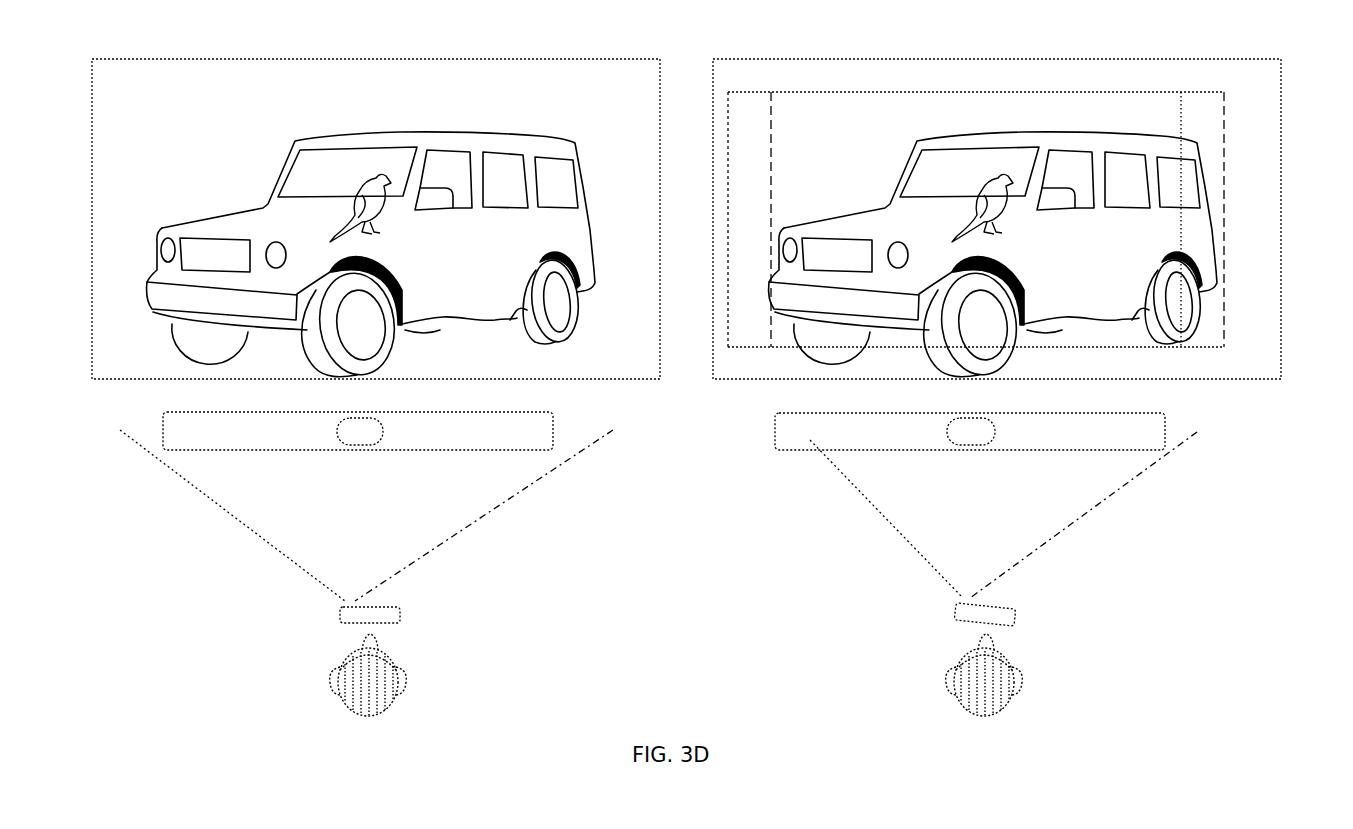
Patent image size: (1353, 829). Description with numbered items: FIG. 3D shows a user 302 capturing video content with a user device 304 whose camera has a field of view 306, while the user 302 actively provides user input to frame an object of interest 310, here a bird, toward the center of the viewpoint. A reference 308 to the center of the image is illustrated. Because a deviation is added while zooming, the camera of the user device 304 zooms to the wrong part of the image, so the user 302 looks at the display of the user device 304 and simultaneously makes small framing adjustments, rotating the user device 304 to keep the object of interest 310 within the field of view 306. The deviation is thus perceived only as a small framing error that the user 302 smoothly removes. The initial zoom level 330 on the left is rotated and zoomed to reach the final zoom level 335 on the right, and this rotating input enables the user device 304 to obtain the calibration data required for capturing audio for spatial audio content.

The user 302 is at (676, 695).
The user device 304 is at (697, 617).
The field of view 306 is at (230, 518).
The reference to the center of the image 308 is at (664, 431).
The object of interest 310 is at (681, 209).
The initial zoom level 330 is at (351, 219).
The final zoom level 335 is at (1029, 219).